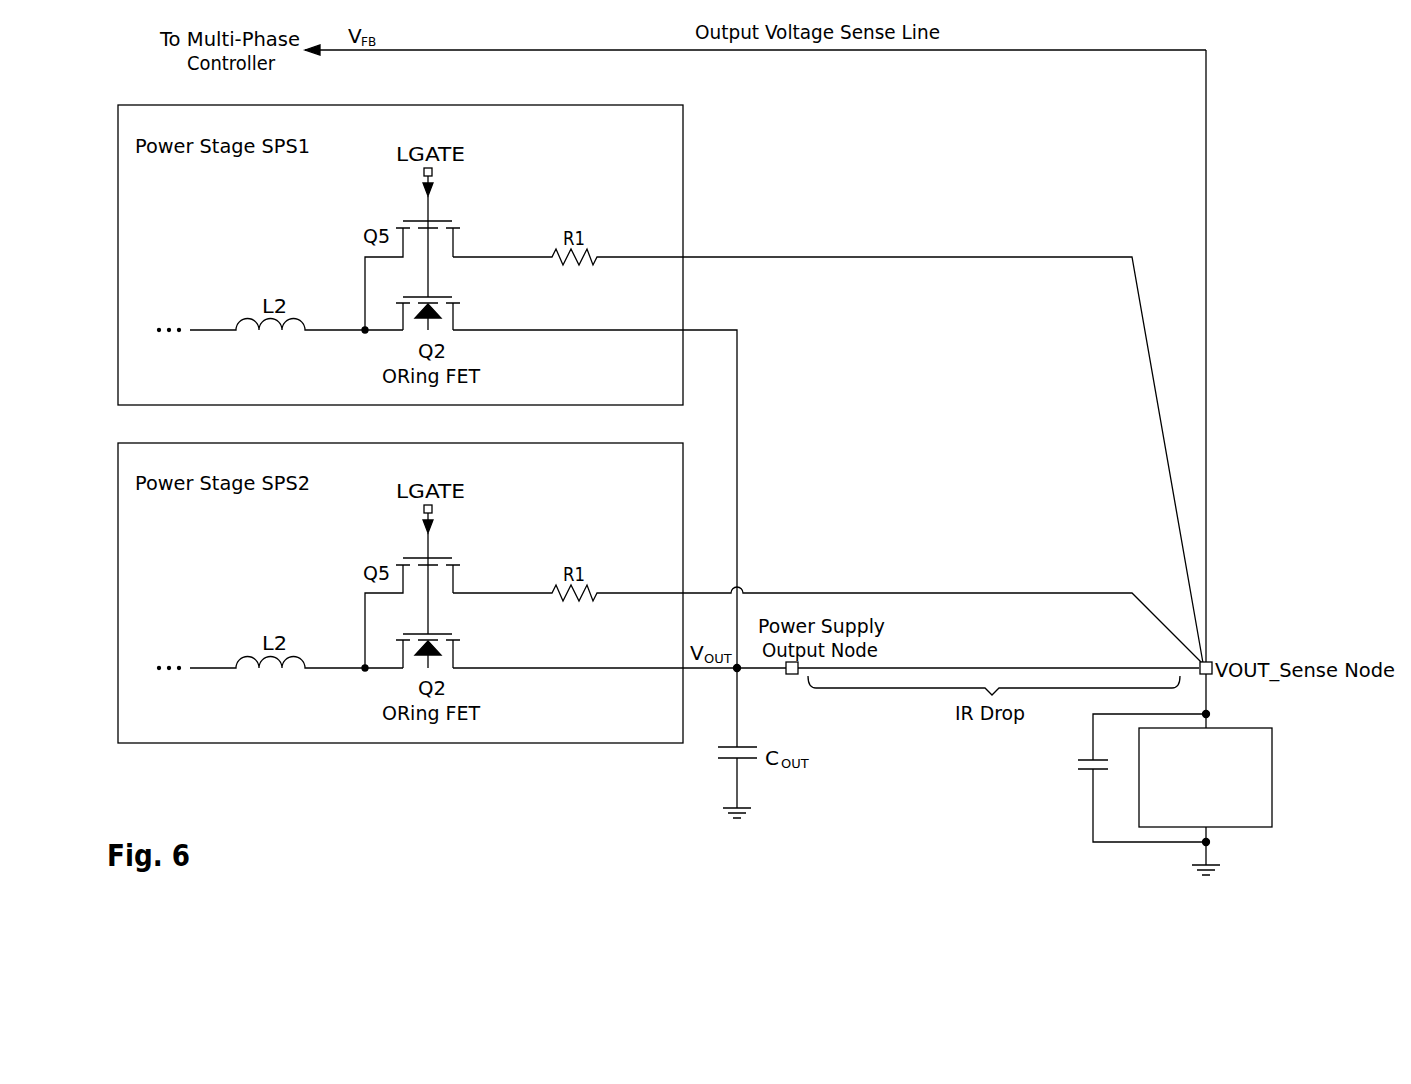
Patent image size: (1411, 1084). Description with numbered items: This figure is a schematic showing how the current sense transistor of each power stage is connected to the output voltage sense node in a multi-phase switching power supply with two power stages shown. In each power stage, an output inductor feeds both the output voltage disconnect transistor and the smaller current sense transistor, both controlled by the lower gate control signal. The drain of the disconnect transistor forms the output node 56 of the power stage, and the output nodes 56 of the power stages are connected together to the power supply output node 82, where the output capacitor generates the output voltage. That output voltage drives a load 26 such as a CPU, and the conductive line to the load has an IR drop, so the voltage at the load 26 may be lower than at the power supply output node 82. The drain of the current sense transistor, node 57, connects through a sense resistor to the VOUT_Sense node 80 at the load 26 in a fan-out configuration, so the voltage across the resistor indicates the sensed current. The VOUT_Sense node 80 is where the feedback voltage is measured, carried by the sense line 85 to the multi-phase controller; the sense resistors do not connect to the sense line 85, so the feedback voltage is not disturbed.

The sense line 85 is at (1206, 118).
The second current terminal of current sense transistor Q5 57 is at (506, 257).
The output node 56 is at (623, 330).
The VOUT_Sense node 80 is at (1211, 660).
The power supply output node 82 is at (792, 675).
The load 26 is at (1273, 752).